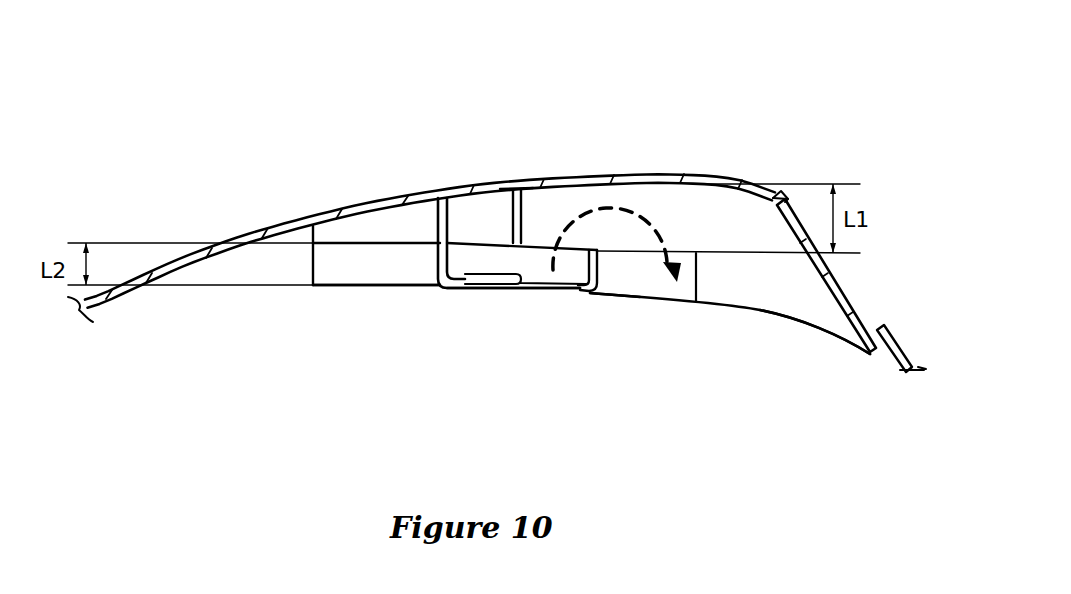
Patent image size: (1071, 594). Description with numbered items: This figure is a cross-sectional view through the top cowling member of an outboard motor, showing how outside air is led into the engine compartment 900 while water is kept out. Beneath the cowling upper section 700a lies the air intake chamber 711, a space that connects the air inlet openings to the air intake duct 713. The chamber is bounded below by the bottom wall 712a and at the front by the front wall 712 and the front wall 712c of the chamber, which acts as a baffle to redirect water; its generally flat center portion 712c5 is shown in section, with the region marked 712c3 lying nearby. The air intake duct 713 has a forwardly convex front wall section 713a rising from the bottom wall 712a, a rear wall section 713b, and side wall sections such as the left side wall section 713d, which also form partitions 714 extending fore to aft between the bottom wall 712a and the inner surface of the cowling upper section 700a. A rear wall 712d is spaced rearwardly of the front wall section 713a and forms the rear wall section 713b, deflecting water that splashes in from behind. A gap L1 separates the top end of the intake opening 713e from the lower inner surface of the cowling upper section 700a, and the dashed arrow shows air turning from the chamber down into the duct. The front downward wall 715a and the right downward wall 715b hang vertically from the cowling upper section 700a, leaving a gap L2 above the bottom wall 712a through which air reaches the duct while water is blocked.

The cowling upper section 700a is at (740, 181).
The air intake chamber 711 is at (540, 271).
The front wall 712 is at (327, 292).
The bottom wall 712a is at (485, 282).
The front wall of the air intake chamber 712c is at (382, 270).
The housing flange portion 712c3 is at (335, 260).
The center portion 712c5 is at (449, 228).
The rear wall 712d is at (887, 290).
The air intake duct 713 is at (640, 280).
The front wall section 713a is at (580, 270).
The rear wall section 713b is at (817, 272).
The left side wall section 713d is at (722, 267).
The intake opening 713e is at (680, 262).
The partition 714 is at (755, 228).
The front downward wall 715a is at (523, 203).
The right downward wall 715b is at (592, 190).
The engine compartment 900 is at (580, 412).